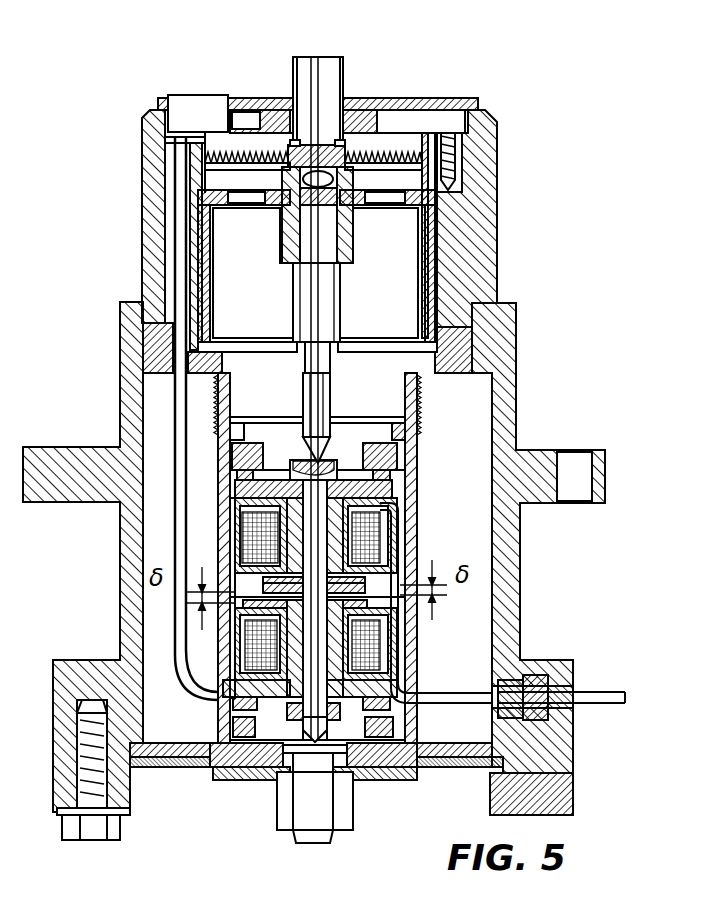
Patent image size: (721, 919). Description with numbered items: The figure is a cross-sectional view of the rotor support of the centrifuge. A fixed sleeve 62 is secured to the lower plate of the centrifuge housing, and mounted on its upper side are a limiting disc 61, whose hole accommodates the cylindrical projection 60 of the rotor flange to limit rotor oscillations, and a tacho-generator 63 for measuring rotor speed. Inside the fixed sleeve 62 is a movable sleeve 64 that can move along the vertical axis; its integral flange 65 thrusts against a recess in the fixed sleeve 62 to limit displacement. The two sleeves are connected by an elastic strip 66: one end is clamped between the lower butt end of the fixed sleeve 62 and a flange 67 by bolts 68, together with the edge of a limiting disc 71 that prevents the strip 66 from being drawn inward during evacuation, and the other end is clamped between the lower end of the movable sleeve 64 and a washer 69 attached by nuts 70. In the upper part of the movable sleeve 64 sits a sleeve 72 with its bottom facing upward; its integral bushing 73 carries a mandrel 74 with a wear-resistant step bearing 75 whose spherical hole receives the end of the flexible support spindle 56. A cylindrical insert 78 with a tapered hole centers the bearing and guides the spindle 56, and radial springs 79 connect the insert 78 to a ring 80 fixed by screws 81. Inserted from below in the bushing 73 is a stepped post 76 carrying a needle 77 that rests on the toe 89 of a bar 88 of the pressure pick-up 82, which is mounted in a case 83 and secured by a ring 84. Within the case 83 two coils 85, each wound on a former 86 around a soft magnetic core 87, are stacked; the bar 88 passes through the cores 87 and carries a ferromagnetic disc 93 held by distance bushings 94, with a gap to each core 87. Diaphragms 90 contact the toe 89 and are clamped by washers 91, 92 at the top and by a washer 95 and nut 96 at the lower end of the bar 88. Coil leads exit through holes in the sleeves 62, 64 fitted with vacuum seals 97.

The flexible support spindle 56 is at (321, 58).
The cylindrical projection 60 is at (297, 60).
The limiting disc 61 is at (362, 98).
The fixed sleeve 62 is at (490, 146).
The tacho-generator 63 is at (183, 95).
The movable sleeve 64 is at (470, 180).
The flange 65 is at (490, 350).
The elastic strip 66 is at (457, 762).
The flange 67 is at (575, 796).
The bolts 68 is at (120, 828).
The washer 69 is at (405, 772).
The nuts 70 is at (352, 822).
The limiting disc 71 is at (458, 748).
The sleeve 72 is at (424, 268).
The bushing 73 is at (284, 258).
The mandrel 74 is at (340, 216).
The step bearing 75 is at (305, 200).
The post 76 is at (300, 303).
The needle 77 is at (313, 462).
The cylindrical insert 78 is at (290, 150).
The springs 79 is at (226, 150).
The ring 80 is at (440, 118).
The screws 81 is at (458, 117).
The pressure pick-up 82 is at (225, 516).
The case 83 is at (240, 645).
The ring 84 is at (220, 414).
The coils 85 is at (385, 528).
The former 86 is at (196, 690).
The core 87 is at (345, 540).
The bar 88 is at (370, 500).
The toe 89 is at (332, 472).
The diaphragm 90 is at (228, 475).
The washer 91 is at (400, 476).
The washer 92 is at (258, 442).
The ferromagnetic disc 93 is at (380, 604).
The distance bushings 94 is at (258, 548).
The washer 95 is at (262, 760).
The nut 96 is at (290, 745).
The vacuum seals 97 is at (555, 682).